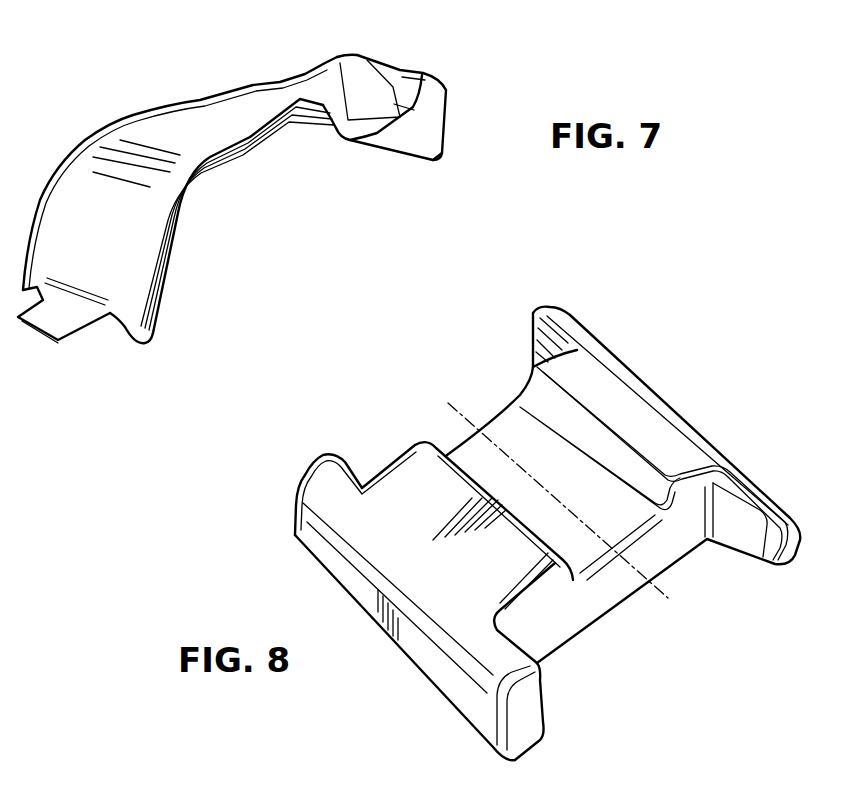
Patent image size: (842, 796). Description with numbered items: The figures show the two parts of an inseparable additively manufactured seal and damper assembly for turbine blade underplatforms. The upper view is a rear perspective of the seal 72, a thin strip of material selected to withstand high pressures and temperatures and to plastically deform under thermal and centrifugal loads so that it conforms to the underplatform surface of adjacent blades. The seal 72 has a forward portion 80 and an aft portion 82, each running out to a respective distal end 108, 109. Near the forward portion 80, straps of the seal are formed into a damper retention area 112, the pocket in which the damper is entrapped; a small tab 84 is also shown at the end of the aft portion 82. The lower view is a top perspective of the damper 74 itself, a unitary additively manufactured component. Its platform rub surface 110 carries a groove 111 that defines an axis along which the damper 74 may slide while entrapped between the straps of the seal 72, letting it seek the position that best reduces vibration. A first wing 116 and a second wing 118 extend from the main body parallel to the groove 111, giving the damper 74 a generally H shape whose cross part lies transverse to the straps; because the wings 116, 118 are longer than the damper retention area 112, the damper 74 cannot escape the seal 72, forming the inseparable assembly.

In FIG. 7, the seal 72 is at (185, 70).
In FIG. 7, the aft portion 82 is at (104, 201).
In FIG. 7, the end tab 84 is at (57, 313).
In FIG. 7, the distal end 109 is at (142, 345).
In FIG. 7, the damper retention area 112 is at (346, 108).
In FIG. 7, the forward portion 80 is at (458, 117).
In FIG. 7, the distal end 108 is at (420, 158).
In FIG. 8, the damper 74 is at (735, 411).
In FIG. 8, the platform rub surface 110 is at (435, 498).
In FIG. 8, the groove 111 is at (537, 462).
In FIG. 8, the second wing 118 is at (650, 408).
In FIG. 8, the first wing 116 is at (390, 567).